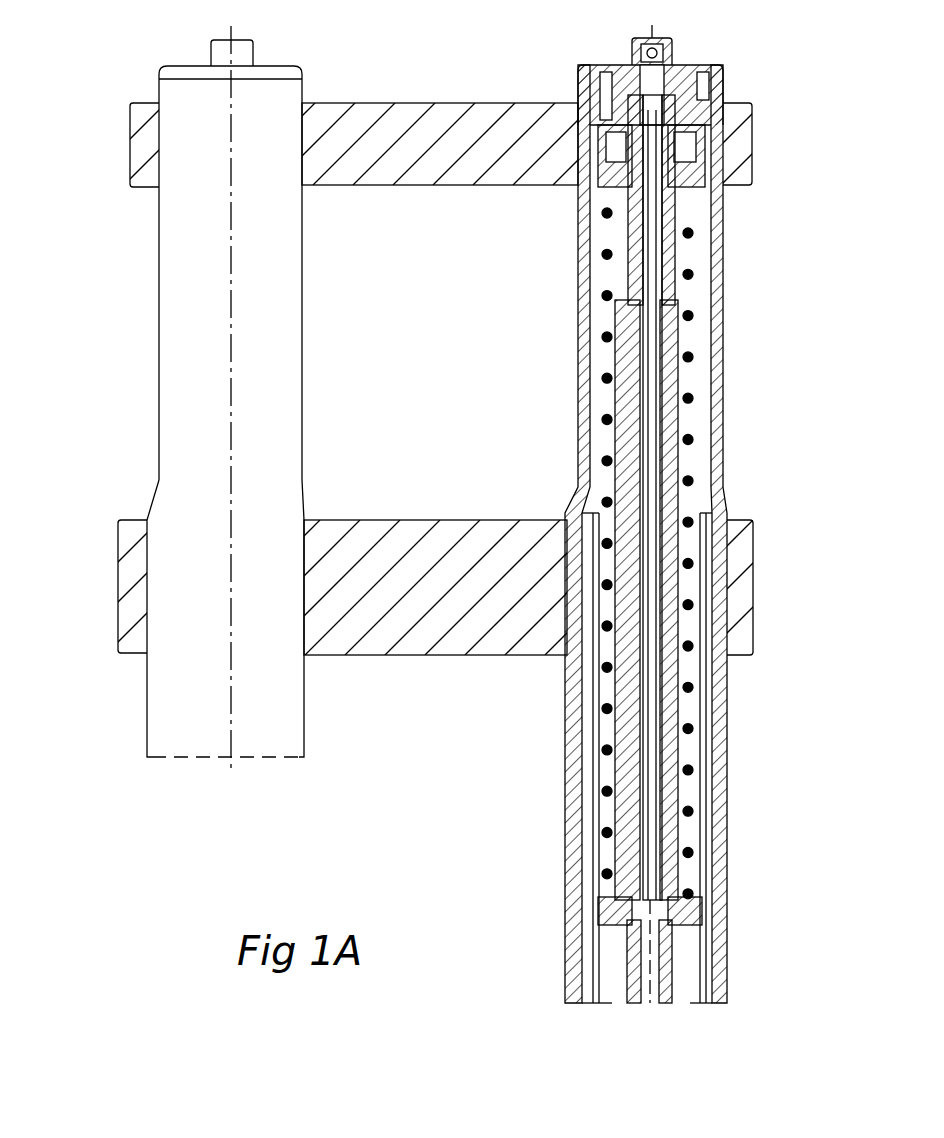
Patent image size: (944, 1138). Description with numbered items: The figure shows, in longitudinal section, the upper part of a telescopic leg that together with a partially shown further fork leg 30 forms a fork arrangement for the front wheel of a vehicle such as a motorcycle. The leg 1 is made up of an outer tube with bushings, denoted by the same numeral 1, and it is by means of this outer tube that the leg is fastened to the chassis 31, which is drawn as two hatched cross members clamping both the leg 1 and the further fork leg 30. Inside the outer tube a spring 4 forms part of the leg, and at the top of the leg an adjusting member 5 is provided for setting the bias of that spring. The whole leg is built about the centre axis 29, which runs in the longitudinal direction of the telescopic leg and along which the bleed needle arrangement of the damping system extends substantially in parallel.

The outer tube 1 is at (701, 534).
The spring 4 is at (722, 553).
The adjusting member 5 is at (737, 35).
The centre axis 29 is at (643, 1003).
The further fork leg 30 is at (157, 283).
The chassis 31 is at (433, 379).